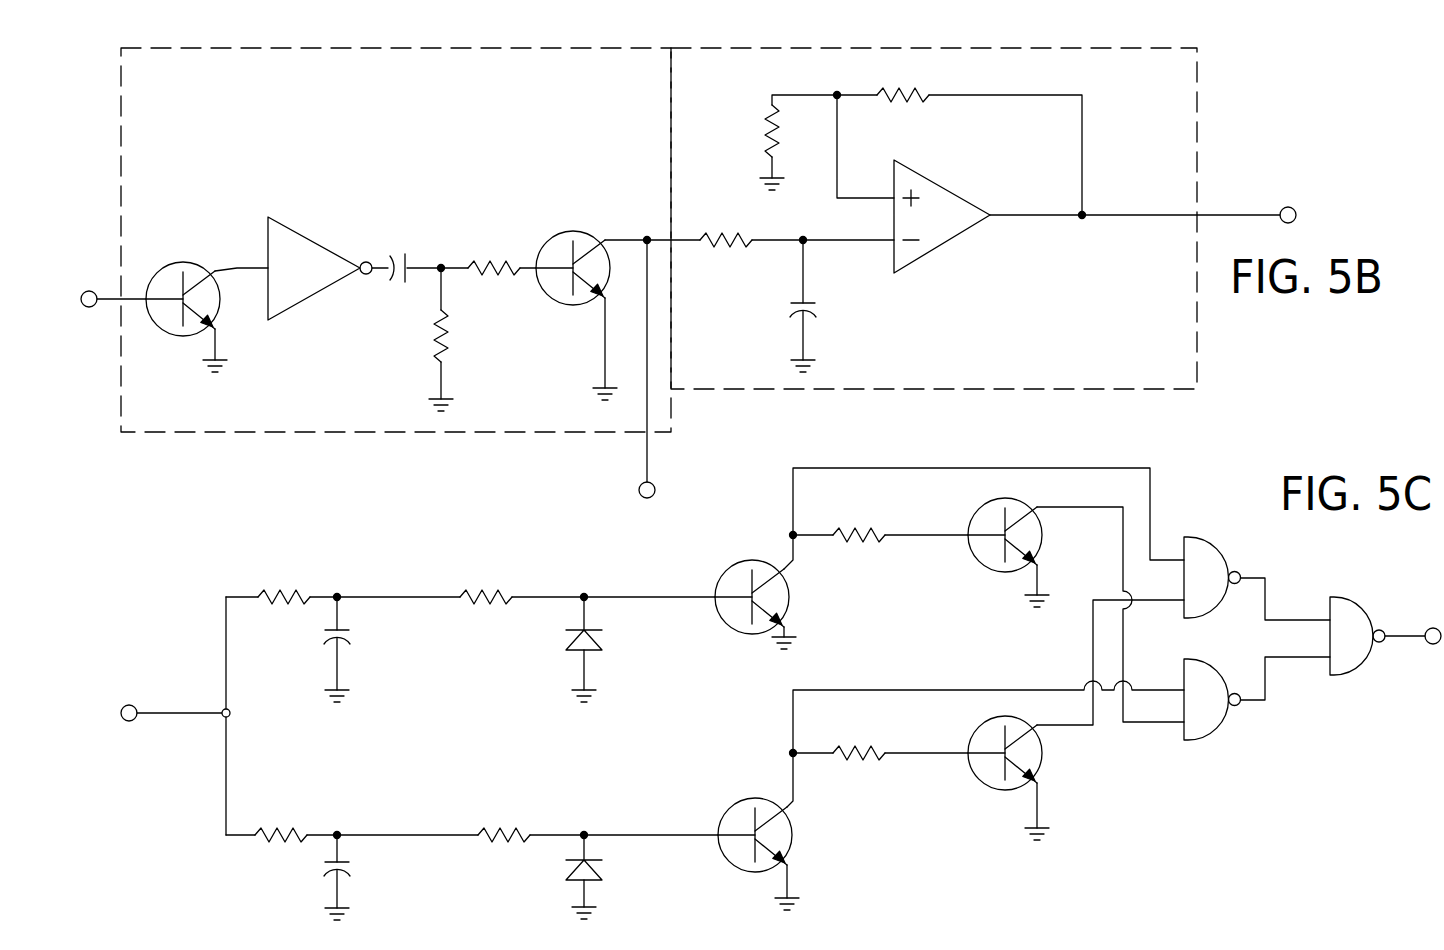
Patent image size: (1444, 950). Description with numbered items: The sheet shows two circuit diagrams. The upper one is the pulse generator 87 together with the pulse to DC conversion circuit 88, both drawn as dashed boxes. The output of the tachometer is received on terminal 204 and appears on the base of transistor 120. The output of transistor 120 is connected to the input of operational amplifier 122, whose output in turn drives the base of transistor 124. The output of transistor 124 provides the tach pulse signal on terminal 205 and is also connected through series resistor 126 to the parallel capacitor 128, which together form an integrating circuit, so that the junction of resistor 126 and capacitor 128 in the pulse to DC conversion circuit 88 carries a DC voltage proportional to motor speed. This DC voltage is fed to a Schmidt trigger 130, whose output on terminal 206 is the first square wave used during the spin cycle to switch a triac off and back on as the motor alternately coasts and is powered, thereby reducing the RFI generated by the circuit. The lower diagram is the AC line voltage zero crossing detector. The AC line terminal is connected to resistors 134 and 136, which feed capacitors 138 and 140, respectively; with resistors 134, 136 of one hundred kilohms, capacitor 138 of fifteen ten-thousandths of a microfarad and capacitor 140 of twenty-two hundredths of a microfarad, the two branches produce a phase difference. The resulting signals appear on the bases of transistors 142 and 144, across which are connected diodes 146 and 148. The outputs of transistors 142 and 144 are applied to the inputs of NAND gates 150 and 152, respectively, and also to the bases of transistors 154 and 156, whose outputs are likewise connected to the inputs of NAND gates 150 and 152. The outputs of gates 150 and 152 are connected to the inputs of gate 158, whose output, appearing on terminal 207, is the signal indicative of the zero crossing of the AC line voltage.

In FIG. 5B, the pulse generator 87 is at (470, 48).
In FIG. 5B, the pulse to DC conversion circuit 88 is at (903, 48).
In FIG. 5B, the terminal 204 is at (97, 290).
In FIG. 5B, the transistor 120 is at (200, 261).
In FIG. 5B, the operational amplifier 122 is at (342, 236).
In FIG. 5B, the transistor 124 is at (555, 232).
In FIG. 5B, the series resistor 126 is at (737, 224).
In FIG. 5B, the parallel capacitor 128 is at (850, 296).
In FIG. 5B, the Schmidt trigger 130 is at (962, 200).
In FIG. 5B, the terminal 205 is at (655, 490).
In FIG. 5B, the terminal 206 is at (1297, 216).
In FIG. 5C, the resistor 134 is at (270, 590).
In FIG. 5C, the resistor 136 is at (285, 850).
In FIG. 5C, the capacitor 138 is at (350, 632).
In FIG. 5C, the capacitor 140 is at (350, 862).
In FIG. 5C, the transistor 142 is at (730, 563).
In FIG. 5C, the transistor 144 is at (740, 802).
In FIG. 5C, the diode 146 is at (568, 648).
In FIG. 5C, the diode 148 is at (565, 882).
In FIG. 5C, the NAND gate 150 is at (1210, 538).
In FIG. 5C, the NAND gate 152 is at (1212, 742).
In FIG. 5C, the transistor 154 is at (990, 568).
In FIG. 5C, the transistor 156 is at (978, 776).
In FIG. 5C, the gate 158 is at (1355, 598).
In FIG. 5C, the terminal 207 is at (1430, 627).